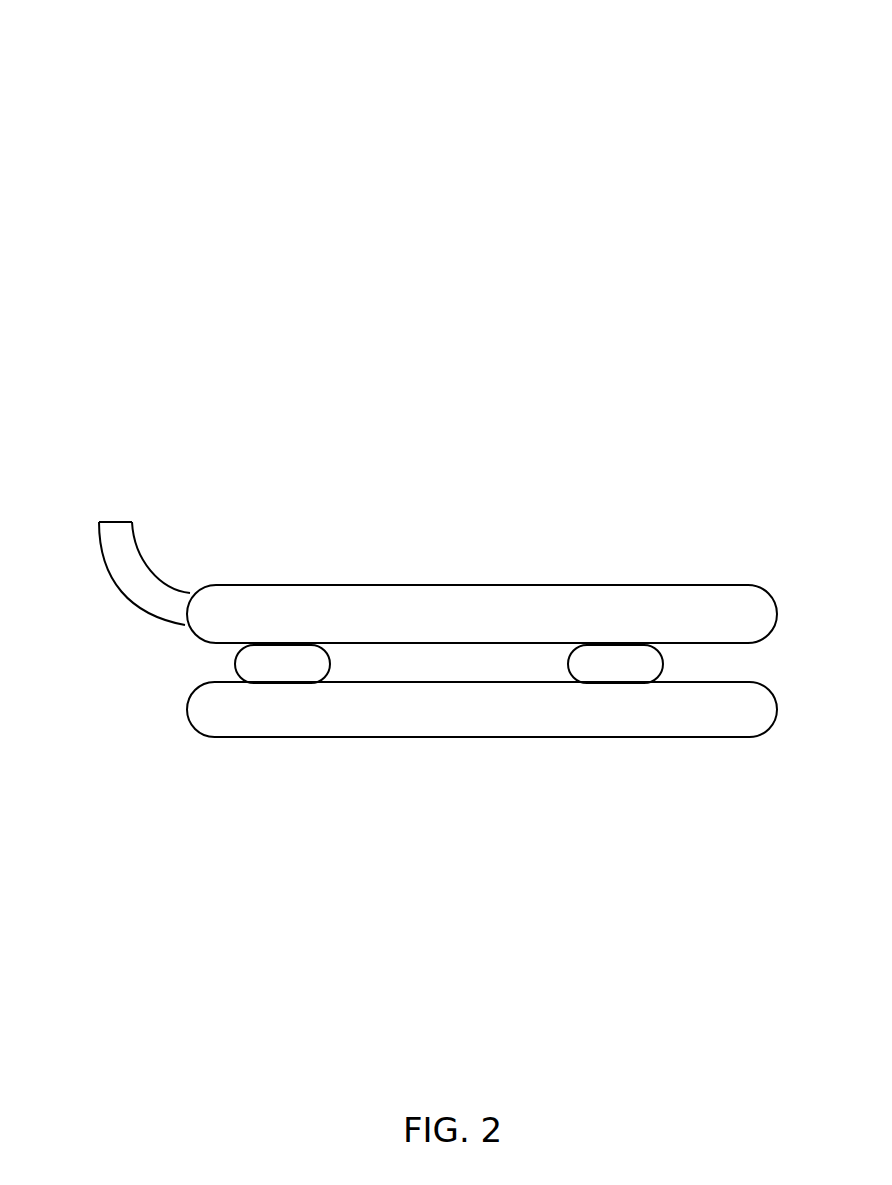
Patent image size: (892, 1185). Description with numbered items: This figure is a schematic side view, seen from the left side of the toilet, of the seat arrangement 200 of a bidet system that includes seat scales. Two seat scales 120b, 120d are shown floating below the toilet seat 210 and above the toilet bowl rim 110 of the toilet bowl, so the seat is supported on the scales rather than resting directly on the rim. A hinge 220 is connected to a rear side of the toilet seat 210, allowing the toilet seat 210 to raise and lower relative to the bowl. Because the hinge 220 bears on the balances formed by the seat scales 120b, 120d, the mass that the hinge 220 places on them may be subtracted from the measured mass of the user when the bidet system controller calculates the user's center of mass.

The touch sensor assembly 200 is at (138, 62).
The toilet seat 210 is at (497, 600).
The toilet bowl rim 110 is at (418, 715).
The seat scale 120b is at (300, 667).
The seat scale 120d is at (607, 663).
The hinge 220 is at (138, 604).